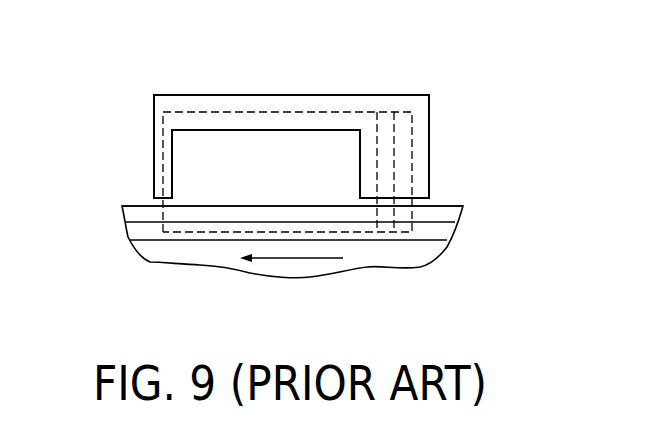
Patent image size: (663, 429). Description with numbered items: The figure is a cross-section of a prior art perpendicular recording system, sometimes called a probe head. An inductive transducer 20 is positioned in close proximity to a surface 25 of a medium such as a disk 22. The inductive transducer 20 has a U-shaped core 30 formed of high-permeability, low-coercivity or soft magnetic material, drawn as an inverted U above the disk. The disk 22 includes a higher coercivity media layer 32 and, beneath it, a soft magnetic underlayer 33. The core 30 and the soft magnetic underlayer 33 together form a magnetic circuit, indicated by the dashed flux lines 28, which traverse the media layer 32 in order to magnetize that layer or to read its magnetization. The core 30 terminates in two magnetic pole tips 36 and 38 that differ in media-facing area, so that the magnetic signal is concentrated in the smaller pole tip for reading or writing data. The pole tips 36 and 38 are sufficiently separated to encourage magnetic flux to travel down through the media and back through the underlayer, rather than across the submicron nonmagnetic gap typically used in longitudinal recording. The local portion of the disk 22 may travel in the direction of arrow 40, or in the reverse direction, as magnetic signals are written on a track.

The inductive transducer 20 is at (439, 65).
The disk 22 is at (473, 262).
The surface 25 is at (449, 196).
The flux lines 28 is at (233, 112).
The U-shaped core 30 is at (322, 95).
The media layer 32 is at (138, 217).
The soft magnetic underlayer 33 is at (387, 240).
The magnetic pole tip 36 is at (154, 198).
The magnetic pole tip 38 is at (360, 198).
The arrow 40 is at (292, 258).